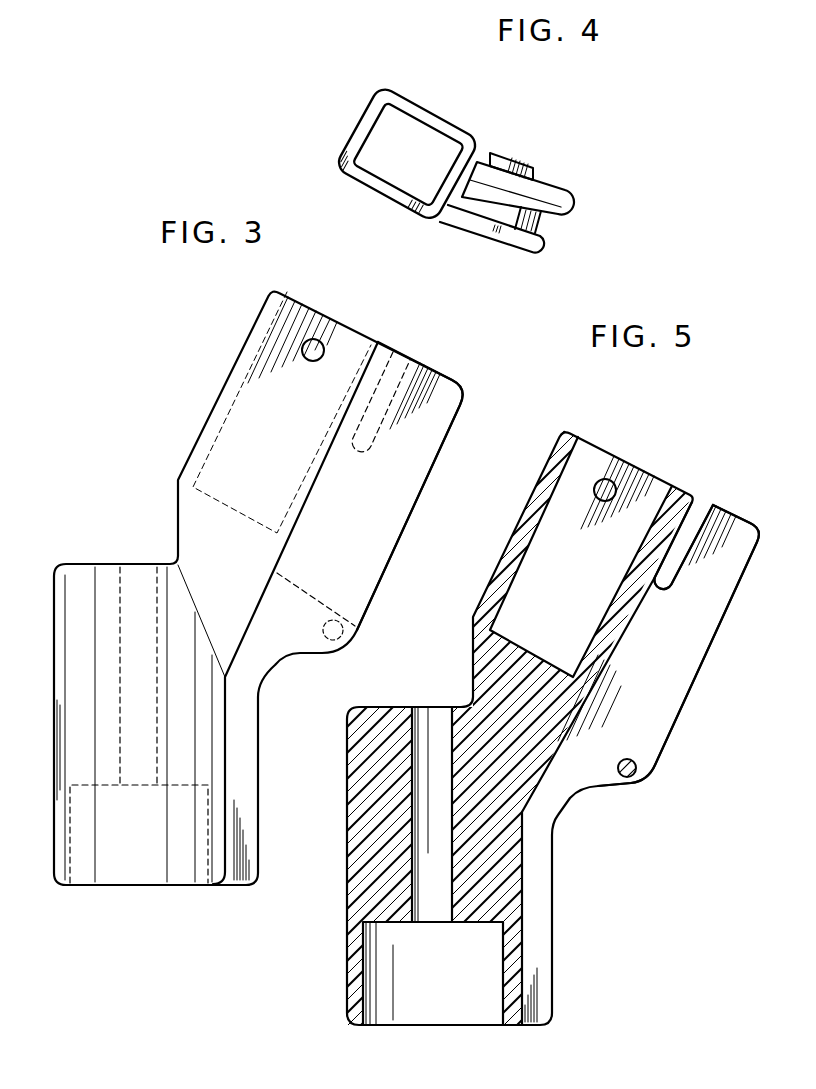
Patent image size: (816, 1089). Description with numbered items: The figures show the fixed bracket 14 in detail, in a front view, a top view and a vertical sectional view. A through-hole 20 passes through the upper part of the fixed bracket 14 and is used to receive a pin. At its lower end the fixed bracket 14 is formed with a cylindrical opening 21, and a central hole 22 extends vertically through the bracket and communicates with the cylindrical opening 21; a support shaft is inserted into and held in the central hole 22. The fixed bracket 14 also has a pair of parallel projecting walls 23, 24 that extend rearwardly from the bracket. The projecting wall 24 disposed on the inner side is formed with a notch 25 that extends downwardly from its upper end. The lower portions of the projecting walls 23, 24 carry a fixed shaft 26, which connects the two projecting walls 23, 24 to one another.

In FIG. 3, the fixed bracket 14 is at (187, 353).
In FIG. 4, the fixed bracket 14 is at (336, 90).
In FIG. 5, the fixed bracket 14 is at (655, 440).
In FIG. 3, the through-hole 20 is at (323, 342).
In FIG. 5, the through-hole 20 is at (605, 479).
In FIG. 3, the cylindrical opening 21 is at (207, 823).
In FIG. 5, the cylindrical opening 21 is at (363, 983).
In FIG. 3, the central hole 22 is at (128, 563).
In FIG. 5, the central hole 22 is at (425, 838).
In FIG. 3, the projecting wall 23 is at (428, 447).
In FIG. 4, the projecting wall 23 is at (478, 218).
In FIG. 4, the projecting wall 24 is at (537, 178).
In FIG. 5, the projecting wall 24 is at (678, 682).
In FIG. 3, the notch 25 is at (415, 355).
In FIG. 4, the notch 25 is at (497, 162).
In FIG. 5, the notch 25 is at (687, 530).
In FIG. 3, the fixed shaft 26 is at (345, 638).
In FIG. 4, the fixed shaft 26 is at (547, 220).
In FIG. 5, the fixed shaft 26 is at (636, 776).